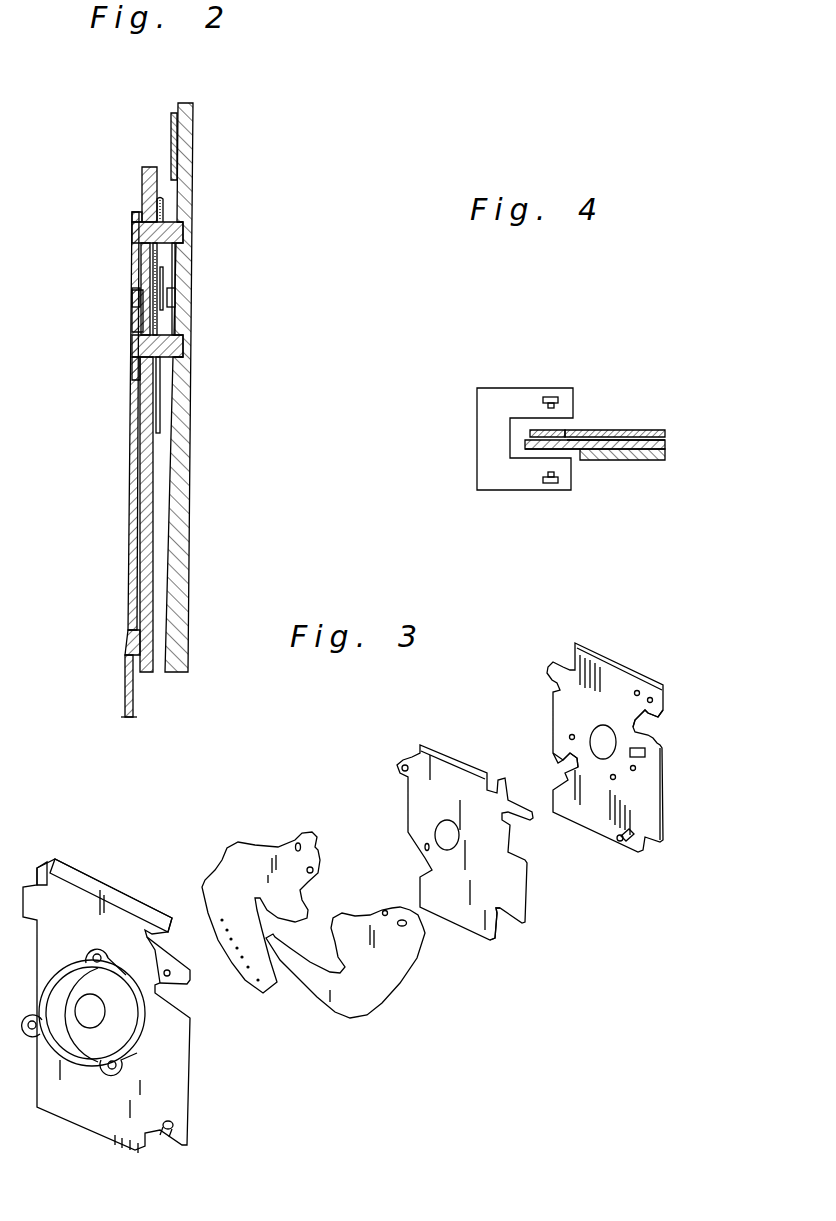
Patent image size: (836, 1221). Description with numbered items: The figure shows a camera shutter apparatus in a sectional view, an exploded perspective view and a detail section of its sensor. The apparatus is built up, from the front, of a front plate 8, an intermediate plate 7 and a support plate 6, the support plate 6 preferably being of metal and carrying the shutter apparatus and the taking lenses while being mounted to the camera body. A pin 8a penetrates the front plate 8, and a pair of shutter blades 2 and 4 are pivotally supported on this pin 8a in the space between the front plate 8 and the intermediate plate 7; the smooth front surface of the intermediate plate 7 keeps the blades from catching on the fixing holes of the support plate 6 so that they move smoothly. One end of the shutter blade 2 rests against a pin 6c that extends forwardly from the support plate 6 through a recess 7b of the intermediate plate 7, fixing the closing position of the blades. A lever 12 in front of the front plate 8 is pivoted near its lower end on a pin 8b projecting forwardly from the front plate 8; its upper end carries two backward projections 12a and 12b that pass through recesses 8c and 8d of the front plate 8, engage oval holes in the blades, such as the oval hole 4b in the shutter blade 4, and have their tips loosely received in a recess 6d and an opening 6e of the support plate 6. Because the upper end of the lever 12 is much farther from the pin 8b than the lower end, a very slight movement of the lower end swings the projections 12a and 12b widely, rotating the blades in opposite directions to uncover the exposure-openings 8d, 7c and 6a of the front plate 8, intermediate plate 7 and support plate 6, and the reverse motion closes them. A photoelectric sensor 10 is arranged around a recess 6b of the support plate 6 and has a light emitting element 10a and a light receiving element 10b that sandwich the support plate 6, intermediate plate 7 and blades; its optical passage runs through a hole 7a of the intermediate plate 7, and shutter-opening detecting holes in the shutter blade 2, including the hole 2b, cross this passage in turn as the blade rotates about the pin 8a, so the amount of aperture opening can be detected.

In FIG. 2, the shutter blade 2 is at (157, 200).
In FIG. 4, the shutter blade 2 is at (625, 430).
In FIG. 3, the shutter blade 2 is at (227, 853).
In FIG. 2, the shutter-opening detecting hole 2b is at (165, 250).
In FIG. 3, the shutter-opening detecting hole 2b is at (298, 843).
In FIG. 2, the shutter blade 4 is at (163, 300).
In FIG. 4, the shutter blade 4 is at (655, 438).
In FIG. 3, the shutter blade 4 is at (358, 1002).
In FIG. 2, the oval hole 4b is at (175, 330).
In FIG. 3, the oval hole 4b is at (402, 930).
In FIG. 2, the support plate 6 is at (193, 110).
In FIG. 4, the support plate 6 is at (655, 461).
In FIG. 3, the support plate 6 is at (645, 800).
In FIG. 3, the exposure-opening 6a is at (605, 733).
In FIG. 4, the recess 6b is at (552, 455).
In FIG. 3, the recess 6b is at (562, 763).
In FIG. 3, the pin 6c is at (632, 840).
In FIG. 2, the recess 6d is at (184, 232).
In FIG. 3, the recess 6d is at (660, 720).
In FIG. 2, the opening 6e is at (185, 360).
In FIG. 3, the opening 6e is at (648, 752).
In FIG. 2, the intermediate plate 7 is at (171, 120).
In FIG. 4, the intermediate plate 7 is at (667, 444).
In FIG. 3, the intermediate plate 7 is at (483, 935).
In FIG. 4, the hole 7a is at (565, 432).
In FIG. 3, the hole 7a is at (440, 828).
In FIG. 3, the recess 7b is at (500, 918).
In FIG. 3, the exposure-opening 7c is at (412, 765).
In FIG. 2, the front plate 8 is at (142, 172).
In FIG. 3, the front plate 8 is at (172, 1098).
In FIG. 2, the pin 8a is at (132, 297).
In FIG. 3, the pin 8a is at (170, 975).
In FIG. 2, the pin 8b is at (128, 640).
In FIG. 3, the pin 8b is at (172, 1132).
In FIG. 2, the recess 8c is at (132, 215).
In FIG. 3, the recess 8c is at (143, 907).
In FIG. 2, the recess 8d is at (134, 365).
In FIG. 3, the recess 8d is at (90, 1018).
In FIG. 4, the photoelectric sensor 10 is at (560, 382).
In FIG. 4, the light emitting element 10a is at (548, 395).
In FIG. 4, the light receiving element 10b is at (552, 484).
In FIG. 2, the lever 12 is at (130, 432).
In FIG. 2, the projection 12a is at (180, 240).
In FIG. 2, the projection 12b is at (180, 350).